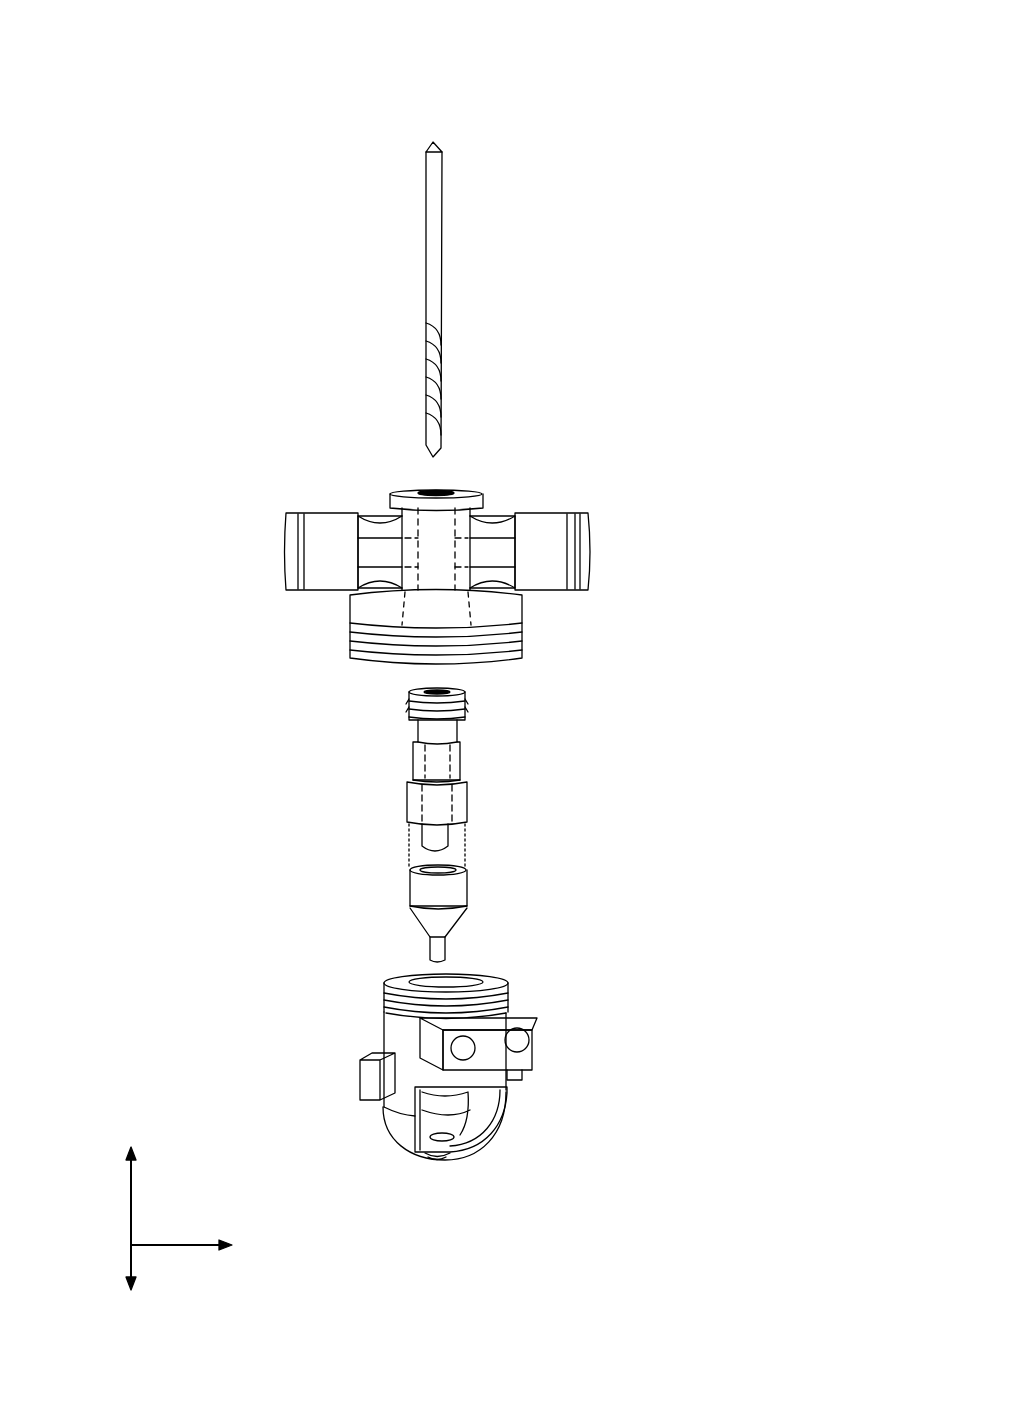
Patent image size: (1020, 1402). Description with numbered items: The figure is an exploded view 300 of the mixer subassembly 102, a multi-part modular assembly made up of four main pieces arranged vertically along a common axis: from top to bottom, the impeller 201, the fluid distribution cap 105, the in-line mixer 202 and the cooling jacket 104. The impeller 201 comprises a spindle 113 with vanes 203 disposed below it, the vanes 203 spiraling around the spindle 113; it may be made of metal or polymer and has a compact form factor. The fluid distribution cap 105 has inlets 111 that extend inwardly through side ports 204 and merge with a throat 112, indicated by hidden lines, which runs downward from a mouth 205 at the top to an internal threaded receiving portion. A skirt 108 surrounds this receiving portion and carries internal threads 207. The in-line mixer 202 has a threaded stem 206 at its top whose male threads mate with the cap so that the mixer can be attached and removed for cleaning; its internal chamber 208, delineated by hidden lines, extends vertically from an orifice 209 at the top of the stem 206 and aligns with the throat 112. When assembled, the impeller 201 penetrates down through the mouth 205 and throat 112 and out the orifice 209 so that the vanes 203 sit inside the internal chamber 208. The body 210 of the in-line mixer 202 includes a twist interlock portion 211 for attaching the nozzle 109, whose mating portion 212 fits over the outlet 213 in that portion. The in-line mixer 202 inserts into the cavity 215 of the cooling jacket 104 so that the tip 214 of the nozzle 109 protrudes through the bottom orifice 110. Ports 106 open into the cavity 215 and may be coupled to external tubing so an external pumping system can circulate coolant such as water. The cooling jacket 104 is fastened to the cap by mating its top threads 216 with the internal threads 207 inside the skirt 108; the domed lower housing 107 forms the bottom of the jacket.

The exploded view 300 is at (580, 68).
The impeller 201 is at (368, 286).
The spindle 113 is at (425, 180).
The vanes 203 is at (443, 350).
The mixer subassembly 102 is at (683, 1160).
The fluid distribution cap 105 is at (256, 483).
The mouth 205 is at (432, 491).
The throat 112 is at (440, 548).
The inlets 111 is at (385, 557).
The ports 204 is at (590, 548).
The skirt 108 is at (505, 625).
The internal threads 207 is at (377, 675).
The in-line mixer 202 is at (555, 700).
The internal chamber 208 is at (441, 686).
The orifice 209 is at (407, 694).
The threaded stem 206 is at (463, 716).
The body 210 is at (413, 757).
The twist interlock portion 211 is at (407, 795).
The outlet 213 is at (425, 843).
The mating portion 212 is at (465, 888).
The tip 214 is at (447, 952).
The nozzle 109 is at (378, 898).
The cooling jacket 104 is at (350, 980).
The threads 216 is at (505, 998).
The ports 106 is at (472, 1046).
The cavity 215 is at (463, 1101).
The domed base 107 is at (503, 1123).
The bottom orifice 110 is at (437, 1156).